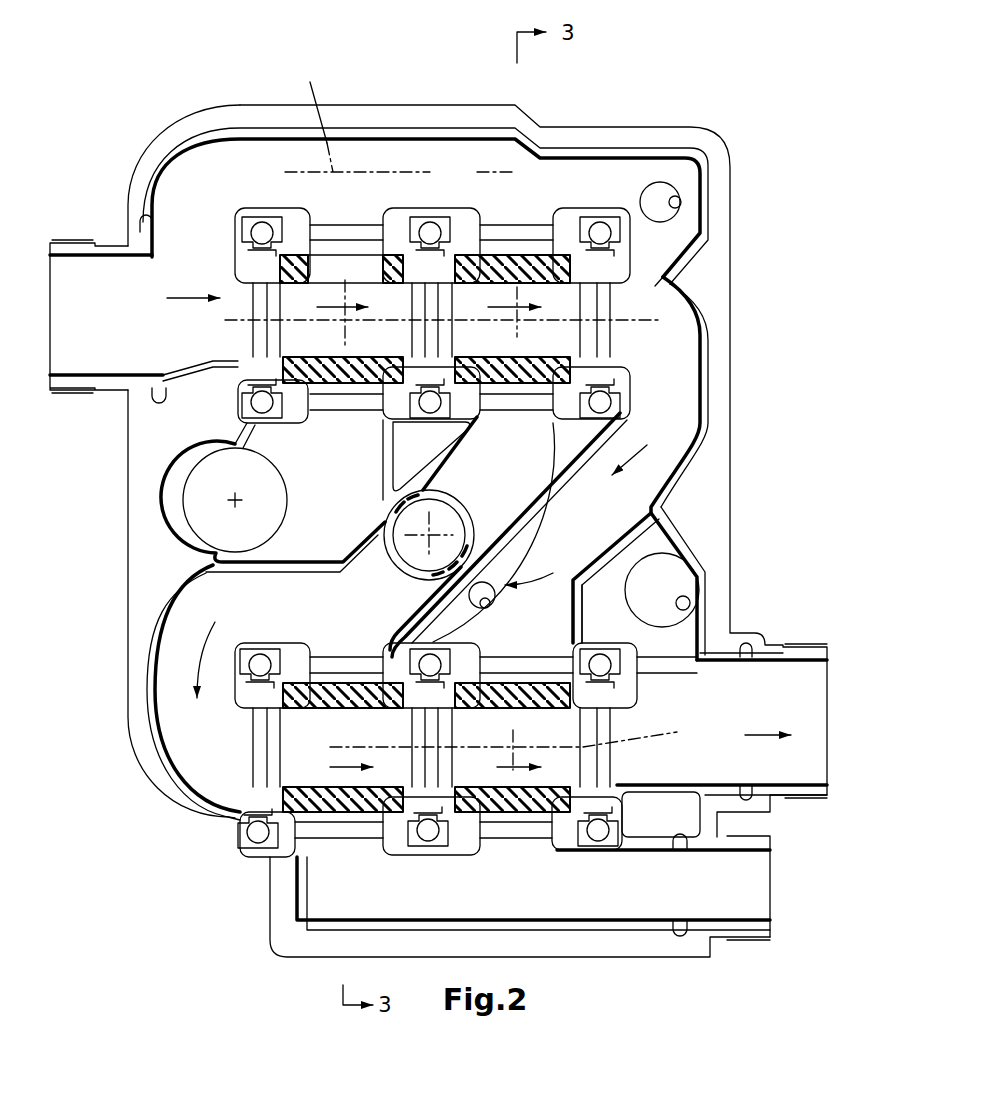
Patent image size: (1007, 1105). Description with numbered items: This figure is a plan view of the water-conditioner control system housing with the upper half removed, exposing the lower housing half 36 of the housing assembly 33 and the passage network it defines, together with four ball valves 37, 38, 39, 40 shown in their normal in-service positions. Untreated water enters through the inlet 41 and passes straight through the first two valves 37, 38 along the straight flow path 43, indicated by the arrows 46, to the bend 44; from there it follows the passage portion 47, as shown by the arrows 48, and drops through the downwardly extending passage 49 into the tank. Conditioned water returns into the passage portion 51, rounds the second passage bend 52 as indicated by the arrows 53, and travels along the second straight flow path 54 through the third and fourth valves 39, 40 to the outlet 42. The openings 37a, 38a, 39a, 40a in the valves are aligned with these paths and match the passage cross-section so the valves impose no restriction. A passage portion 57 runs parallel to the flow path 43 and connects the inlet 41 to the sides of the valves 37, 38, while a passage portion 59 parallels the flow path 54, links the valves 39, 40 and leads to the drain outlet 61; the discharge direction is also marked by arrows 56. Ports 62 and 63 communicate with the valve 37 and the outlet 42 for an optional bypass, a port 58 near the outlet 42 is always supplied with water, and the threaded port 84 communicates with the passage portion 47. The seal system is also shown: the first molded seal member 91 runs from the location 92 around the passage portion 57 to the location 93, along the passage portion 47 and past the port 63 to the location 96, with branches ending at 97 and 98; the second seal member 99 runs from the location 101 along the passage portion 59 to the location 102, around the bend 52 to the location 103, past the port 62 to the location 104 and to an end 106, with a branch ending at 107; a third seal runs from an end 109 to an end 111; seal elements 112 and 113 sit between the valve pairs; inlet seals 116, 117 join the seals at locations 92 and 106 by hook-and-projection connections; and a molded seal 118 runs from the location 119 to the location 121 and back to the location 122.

The housing assembly 33 is at (688, 98).
The lower housing half 36 is at (711, 150).
The ball valve 37 is at (350, 415).
The opening 37a is at (300, 335).
The ball valve 38 is at (515, 420).
The opening 38a is at (575, 340).
The ball valve 39 is at (290, 748).
The opening 39a is at (328, 690).
The ball valve 40 is at (518, 672).
The opening 40a is at (485, 800).
The inlet 41 is at (78, 240).
The outlet 42 is at (790, 797).
The straight flow path 43 is at (617, 320).
The bend 44 is at (675, 358).
The arrows 46 is at (505, 303).
The passage portion 47 is at (580, 513).
The arrows 48 is at (642, 460).
The downwardly extending passage 49 is at (507, 560).
The passage portion 51 is at (490, 475).
The second passage bend 52 is at (177, 683).
The arrows 53 is at (187, 643).
The second straight flow path 54 is at (520, 736).
The discharge air flow 56 is at (508, 815).
The passage portion 57 is at (400, 115).
The port 58 is at (676, 199).
The passage portion 59 is at (514, 905).
The drain outlet 61 is at (750, 942).
The port 62 is at (238, 455).
The port 63 is at (690, 590).
The threaded port 84 is at (478, 605).
The first molded seal member 91 is at (386, 128).
The location 92 is at (140, 220).
The location 93 is at (674, 283).
The location 96 is at (750, 640).
The end 97 is at (588, 222).
The end 98 is at (630, 670).
The second seal member 99 is at (540, 928).
The location 101 is at (682, 942).
The location 102 is at (240, 838).
The location 103 is at (203, 563).
The location 104 is at (243, 403).
The end 106 is at (152, 405).
The end 107 is at (431, 456).
The end 109 is at (404, 640).
The end 111 is at (627, 413).
The seal element 112 is at (433, 222).
The seal element 113 is at (428, 848).
The seal member 116 is at (92, 256).
The seal member 117 is at (90, 378).
The molded seal 118 is at (643, 793).
The location 119 is at (753, 800).
The location 121 is at (600, 845).
The location 122 is at (684, 847).